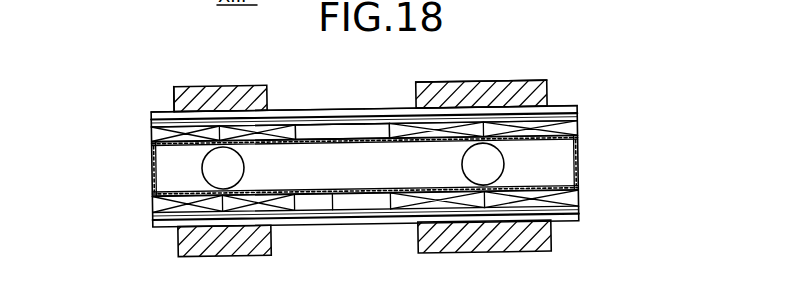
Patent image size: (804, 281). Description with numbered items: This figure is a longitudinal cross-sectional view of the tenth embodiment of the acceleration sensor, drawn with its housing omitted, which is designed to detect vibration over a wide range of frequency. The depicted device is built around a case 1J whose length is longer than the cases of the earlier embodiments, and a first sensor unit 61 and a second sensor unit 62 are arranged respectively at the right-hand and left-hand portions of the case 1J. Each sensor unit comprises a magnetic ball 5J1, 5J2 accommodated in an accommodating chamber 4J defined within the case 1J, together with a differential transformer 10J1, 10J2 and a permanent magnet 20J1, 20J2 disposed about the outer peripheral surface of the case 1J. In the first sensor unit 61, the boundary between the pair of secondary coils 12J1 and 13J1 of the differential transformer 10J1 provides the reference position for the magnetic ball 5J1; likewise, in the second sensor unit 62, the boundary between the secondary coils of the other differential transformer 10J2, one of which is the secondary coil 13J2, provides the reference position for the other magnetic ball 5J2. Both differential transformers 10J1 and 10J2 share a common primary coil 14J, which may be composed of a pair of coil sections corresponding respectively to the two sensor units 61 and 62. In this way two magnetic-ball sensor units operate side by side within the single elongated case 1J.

The case 1J is at (333, 199).
The accommodating chamber 4J is at (544, 188).
The magnetic ball 5J1 is at (505, 165).
The magnetic ball 5J2 is at (203, 174).
The differential transformer 10J1 is at (575, 98).
The differential transformer 10J2 is at (147, 113).
The secondary coil 12J1 is at (378, 126).
The secondary coil 13J1 is at (570, 128).
The secondary coil 13J2 is at (150, 137).
The primary coil 14J is at (347, 113).
The permanent magnet 20J1 is at (470, 88).
The permanent magnet 20J2 is at (203, 90).
The first sensor unit 61 is at (520, 72).
The second sensor unit 62 is at (166, 97).